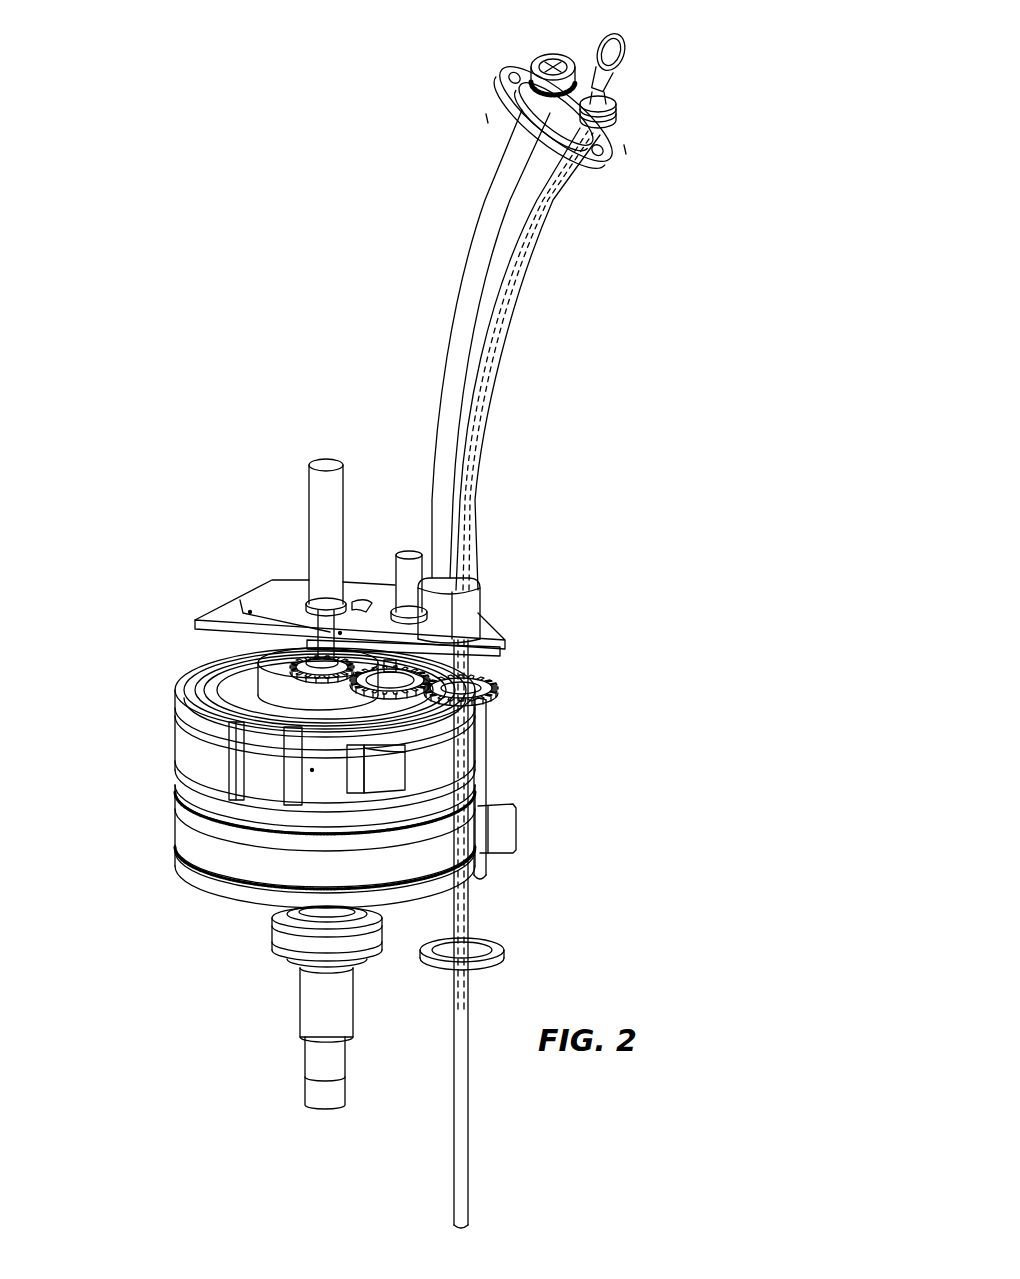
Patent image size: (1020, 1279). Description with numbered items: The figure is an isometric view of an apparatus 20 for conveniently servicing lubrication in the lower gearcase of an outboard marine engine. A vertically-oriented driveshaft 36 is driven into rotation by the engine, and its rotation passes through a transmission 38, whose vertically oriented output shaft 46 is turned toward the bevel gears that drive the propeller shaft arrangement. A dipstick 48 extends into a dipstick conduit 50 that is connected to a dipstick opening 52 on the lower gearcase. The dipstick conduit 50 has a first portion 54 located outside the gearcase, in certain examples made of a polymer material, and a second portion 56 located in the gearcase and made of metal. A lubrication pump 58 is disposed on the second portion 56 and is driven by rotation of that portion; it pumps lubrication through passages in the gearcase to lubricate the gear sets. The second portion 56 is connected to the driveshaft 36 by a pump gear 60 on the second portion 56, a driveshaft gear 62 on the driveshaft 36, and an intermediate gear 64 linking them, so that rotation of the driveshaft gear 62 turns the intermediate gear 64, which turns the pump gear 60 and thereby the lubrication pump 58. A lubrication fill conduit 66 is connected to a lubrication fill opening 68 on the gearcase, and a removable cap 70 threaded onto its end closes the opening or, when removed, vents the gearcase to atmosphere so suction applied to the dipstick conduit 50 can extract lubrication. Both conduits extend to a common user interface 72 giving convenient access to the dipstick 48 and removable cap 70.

The apparatus 20 is at (550, 382).
The driveshaft 36 is at (313, 528).
The transmission 38 is at (162, 769).
The output shaft 46 is at (314, 1059).
The dipstick 48 is at (553, 198).
The dipstick conduit 50 is at (503, 519).
The dipstick opening 52 is at (480, 622).
The first portion 54 is at (527, 288).
The second portion 56 is at (478, 737).
The lubrication pump 58 is at (497, 951).
The pump gear 60 is at (482, 681).
The driveshaft gear 62 is at (286, 668).
The intermediate gear 64 is at (392, 690).
The lubrication fill conduit 66 is at (466, 241).
The lubrication fill opening 68 is at (440, 578).
The removable cap 70 is at (540, 62).
The common user interface 72 is at (488, 99).